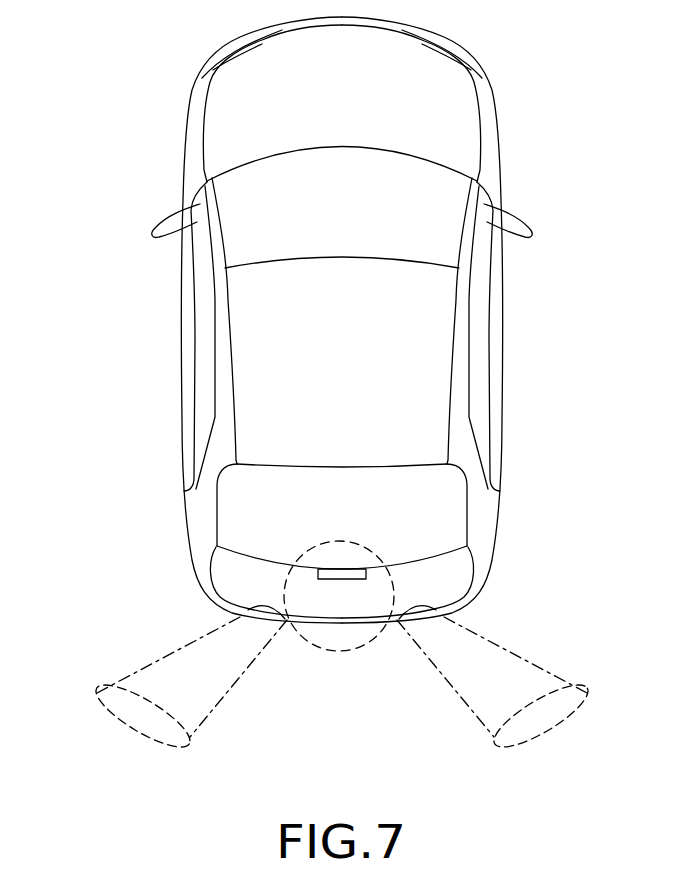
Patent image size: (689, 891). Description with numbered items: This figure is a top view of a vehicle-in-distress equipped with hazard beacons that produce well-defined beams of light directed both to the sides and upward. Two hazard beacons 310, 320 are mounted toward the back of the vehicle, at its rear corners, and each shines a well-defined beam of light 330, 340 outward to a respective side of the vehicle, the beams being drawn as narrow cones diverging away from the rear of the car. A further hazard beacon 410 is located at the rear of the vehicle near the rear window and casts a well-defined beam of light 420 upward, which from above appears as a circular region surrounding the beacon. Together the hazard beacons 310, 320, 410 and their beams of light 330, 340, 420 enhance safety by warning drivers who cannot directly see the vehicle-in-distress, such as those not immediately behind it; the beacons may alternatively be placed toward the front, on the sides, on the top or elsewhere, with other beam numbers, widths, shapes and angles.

The hazard beacon 310 is at (228, 597).
The hazard beacon 320 is at (456, 596).
The well-defined beam of light 330 is at (134, 645).
The well-defined beam of light 340 is at (548, 645).
The hazard beacon 410 is at (300, 556).
The well-defined beam of light 420 is at (374, 668).